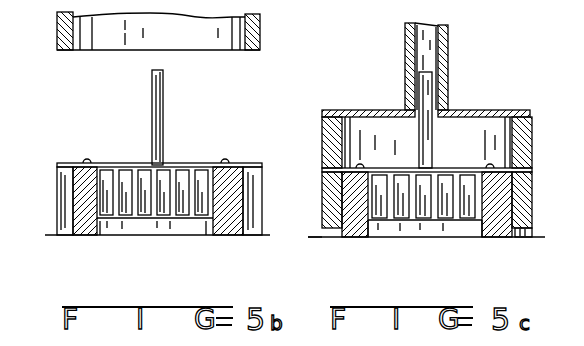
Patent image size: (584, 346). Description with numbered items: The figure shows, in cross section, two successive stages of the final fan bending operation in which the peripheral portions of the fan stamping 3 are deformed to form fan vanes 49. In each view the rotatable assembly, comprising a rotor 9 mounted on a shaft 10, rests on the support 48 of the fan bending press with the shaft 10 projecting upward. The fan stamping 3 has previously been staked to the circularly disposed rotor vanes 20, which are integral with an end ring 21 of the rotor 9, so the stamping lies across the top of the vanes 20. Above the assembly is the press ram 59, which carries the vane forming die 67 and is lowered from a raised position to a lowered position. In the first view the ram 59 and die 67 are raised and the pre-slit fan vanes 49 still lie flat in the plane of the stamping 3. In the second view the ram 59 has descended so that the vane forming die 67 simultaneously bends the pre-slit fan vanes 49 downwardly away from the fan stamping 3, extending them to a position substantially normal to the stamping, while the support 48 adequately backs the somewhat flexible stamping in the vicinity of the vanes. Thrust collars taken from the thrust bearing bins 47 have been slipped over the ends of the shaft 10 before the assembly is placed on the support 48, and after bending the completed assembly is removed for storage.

In FIG. 5B, the press ram 59 is at (262, 42).
In FIG. 5C, the press ram 59 is at (449, 62).
In FIG. 5B, the vane forming die 67 is at (246, 45).
In FIG. 5C, the vane forming die 67 is at (521, 232).
In FIG. 5B, the shaft 10 is at (164, 108).
In FIG. 5C, the shaft 10 is at (426, 90).
In FIG. 5B, the fan stamping 3 is at (120, 163).
In FIG. 5C, the fan stamping 3 is at (468, 168).
In FIG. 5B, the fan vanes 49 is at (37, 201).
In FIG. 5C, the fan vanes 49 is at (322, 200).
In FIG. 5B, the support 48 is at (50, 235).
In FIG. 5C, the support 48 is at (313, 237).
In FIG. 5C, the thrust bearing bins 47 is at (537, 239).
In FIG. 5B, the end ring 21 is at (124, 220).
In FIG. 5C, the end ring 21 is at (417, 221).
In FIG. 5B, the rotor 9 is at (146, 230).
In FIG. 5C, the rotor 9 is at (393, 237).
In FIG. 5B, the rotor vanes 20 is at (194, 203).
In FIG. 5C, the rotor vanes 20 is at (470, 207).